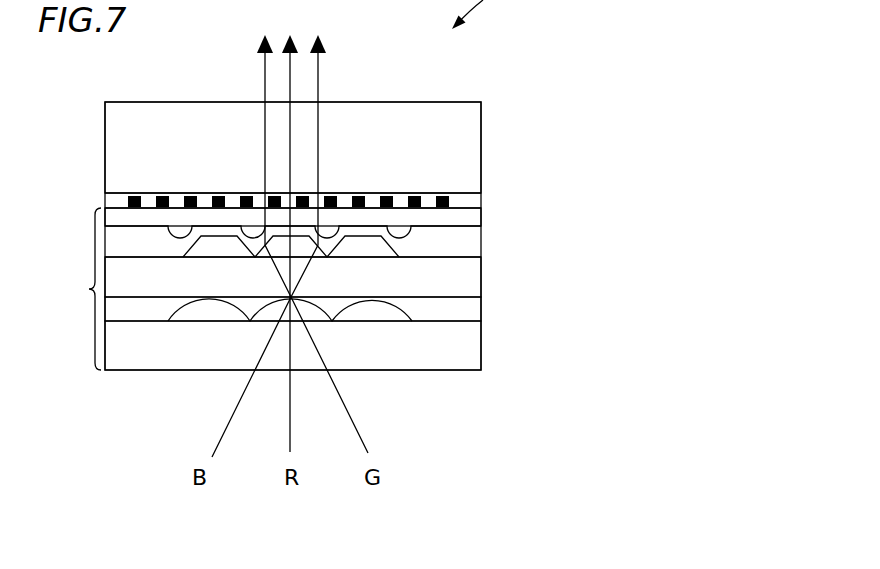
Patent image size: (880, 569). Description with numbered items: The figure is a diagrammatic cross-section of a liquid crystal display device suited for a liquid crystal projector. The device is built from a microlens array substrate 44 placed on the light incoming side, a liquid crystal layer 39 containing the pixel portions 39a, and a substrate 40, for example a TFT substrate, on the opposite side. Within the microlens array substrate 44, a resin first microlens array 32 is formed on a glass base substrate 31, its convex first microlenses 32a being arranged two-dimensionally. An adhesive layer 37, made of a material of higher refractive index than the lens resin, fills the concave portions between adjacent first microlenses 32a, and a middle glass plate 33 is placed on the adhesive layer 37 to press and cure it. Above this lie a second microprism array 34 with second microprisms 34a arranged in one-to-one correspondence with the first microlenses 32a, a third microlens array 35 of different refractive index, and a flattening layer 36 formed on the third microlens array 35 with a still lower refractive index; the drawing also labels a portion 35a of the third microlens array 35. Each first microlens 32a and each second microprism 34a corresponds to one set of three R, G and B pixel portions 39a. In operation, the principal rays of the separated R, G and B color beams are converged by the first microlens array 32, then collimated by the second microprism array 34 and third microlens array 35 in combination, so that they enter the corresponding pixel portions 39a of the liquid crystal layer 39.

The base substrate 31 is at (467, 342).
The first microlens array 32 is at (431, 332).
The first microlens 32a is at (412, 314).
The middle glass plate 33 is at (453, 275).
The second microprism array 34 is at (443, 235).
The second microprism 34a is at (373, 252).
The third microlens array 35 is at (404, 175).
The light shielding portion 35a is at (345, 236).
The flattening layer 36 is at (460, 220).
The adhesive layer 37 is at (400, 331).
The liquid crystal layer 39 is at (386, 169).
The pixel portion 39a is at (475, 203).
The substrate 40 is at (472, 133).
The microlens array substrate 44 is at (74, 289).